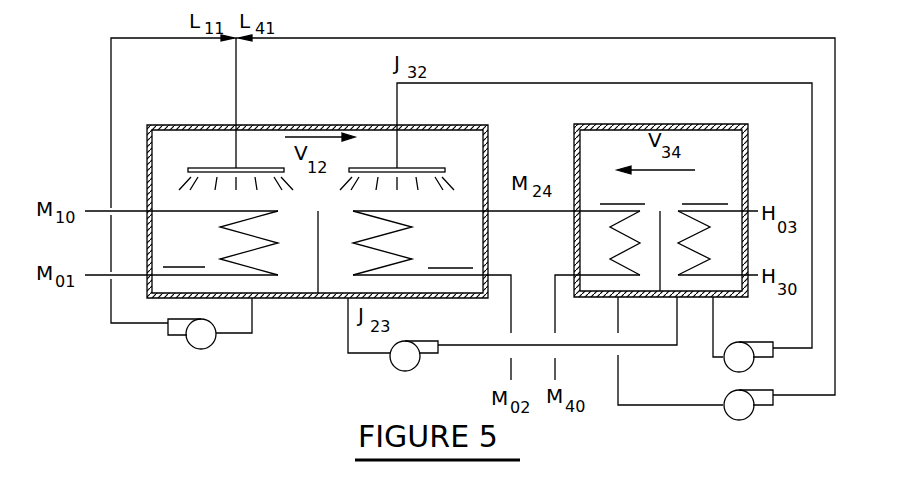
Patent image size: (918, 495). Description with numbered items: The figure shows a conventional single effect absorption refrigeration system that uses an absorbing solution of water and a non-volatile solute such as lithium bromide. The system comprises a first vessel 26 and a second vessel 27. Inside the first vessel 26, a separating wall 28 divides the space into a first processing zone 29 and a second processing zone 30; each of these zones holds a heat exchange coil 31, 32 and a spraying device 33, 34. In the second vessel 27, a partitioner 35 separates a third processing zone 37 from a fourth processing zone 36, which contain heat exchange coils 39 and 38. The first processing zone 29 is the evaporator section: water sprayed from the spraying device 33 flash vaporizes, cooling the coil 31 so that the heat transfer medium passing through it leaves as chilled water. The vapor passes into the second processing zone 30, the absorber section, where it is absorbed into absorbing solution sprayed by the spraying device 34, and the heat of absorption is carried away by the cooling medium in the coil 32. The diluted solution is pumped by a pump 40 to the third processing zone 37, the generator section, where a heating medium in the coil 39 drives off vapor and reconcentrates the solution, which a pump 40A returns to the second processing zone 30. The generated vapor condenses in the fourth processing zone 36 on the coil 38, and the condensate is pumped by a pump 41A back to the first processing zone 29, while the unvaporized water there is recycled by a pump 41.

The first vessel 26 is at (197, 125).
The second vessel 27 is at (692, 124).
The separating wall 28 is at (318, 248).
The first processing zone 29 is at (192, 238).
The second processing zone 30 is at (465, 238).
The heat exchange coil 31 is at (265, 243).
The heat exchange coil 32 is at (372, 236).
The spraying device 33 is at (222, 168).
The spraying device 34 is at (413, 168).
The partitioner 35 is at (659, 228).
The fourth processing zone 36 is at (610, 236).
The third processing zone 37 is at (737, 236).
The heat exchange coil 38 is at (611, 243).
The heat exchange coil 39 is at (709, 243).
The pump 40 is at (410, 352).
The pump 40A is at (745, 353).
The pump 41 is at (195, 333).
The pump 41A is at (745, 401).